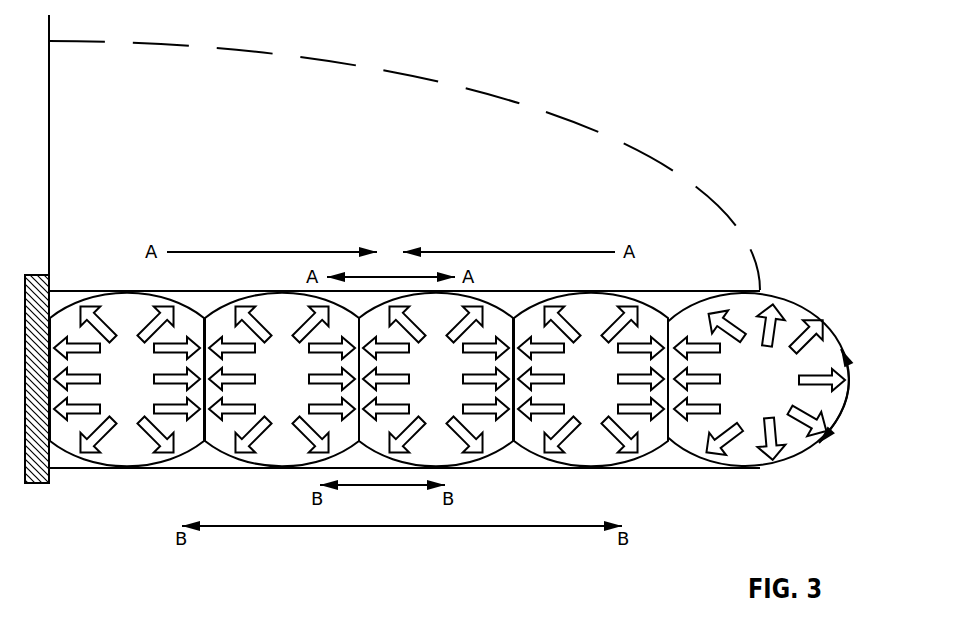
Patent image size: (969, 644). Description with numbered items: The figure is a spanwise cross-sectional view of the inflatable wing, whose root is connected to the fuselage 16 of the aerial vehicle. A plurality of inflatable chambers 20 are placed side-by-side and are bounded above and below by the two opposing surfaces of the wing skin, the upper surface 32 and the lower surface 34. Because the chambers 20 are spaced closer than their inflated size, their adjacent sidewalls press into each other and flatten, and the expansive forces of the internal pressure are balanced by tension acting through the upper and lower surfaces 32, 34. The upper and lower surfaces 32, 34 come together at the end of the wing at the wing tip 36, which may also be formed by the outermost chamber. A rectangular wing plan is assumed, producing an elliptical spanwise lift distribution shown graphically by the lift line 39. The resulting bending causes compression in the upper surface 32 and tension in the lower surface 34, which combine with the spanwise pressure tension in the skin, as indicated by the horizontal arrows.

The fuselage 16 is at (86, 294).
The chambers 20 is at (55, 443).
The upper surface 32 is at (653, 290).
The lower surface 34 is at (665, 468).
The wing tip 36 is at (831, 238).
The lift line 39 is at (277, 52).